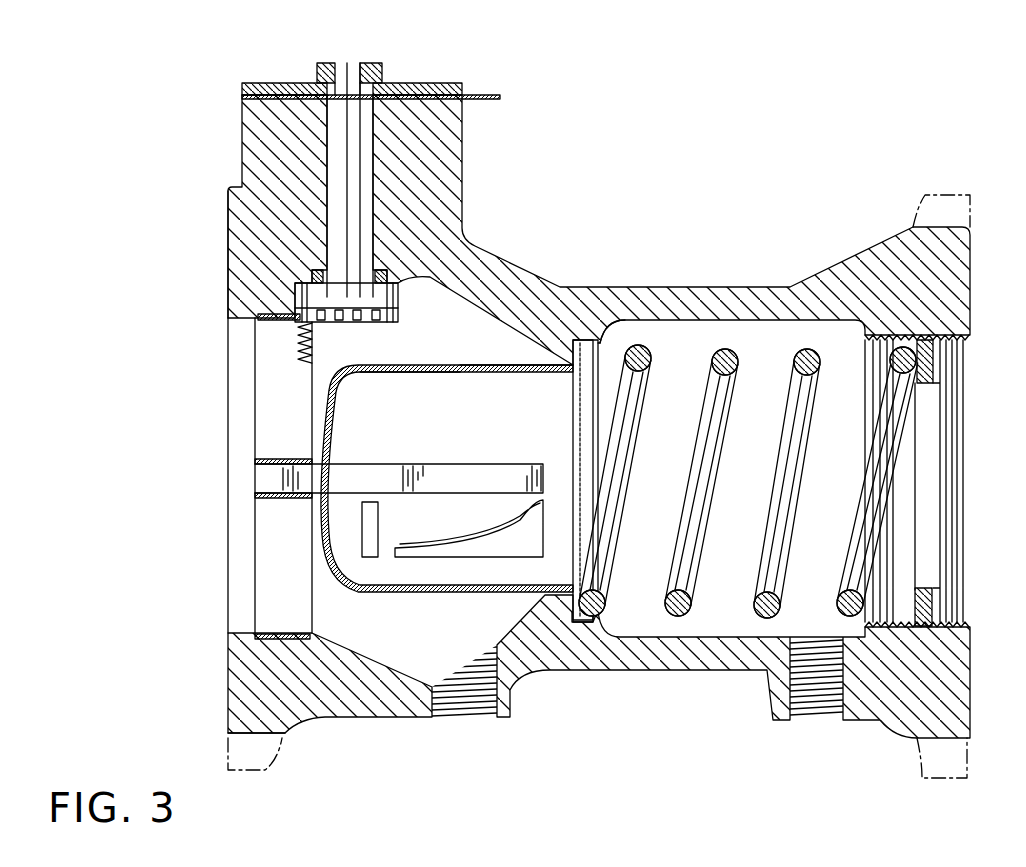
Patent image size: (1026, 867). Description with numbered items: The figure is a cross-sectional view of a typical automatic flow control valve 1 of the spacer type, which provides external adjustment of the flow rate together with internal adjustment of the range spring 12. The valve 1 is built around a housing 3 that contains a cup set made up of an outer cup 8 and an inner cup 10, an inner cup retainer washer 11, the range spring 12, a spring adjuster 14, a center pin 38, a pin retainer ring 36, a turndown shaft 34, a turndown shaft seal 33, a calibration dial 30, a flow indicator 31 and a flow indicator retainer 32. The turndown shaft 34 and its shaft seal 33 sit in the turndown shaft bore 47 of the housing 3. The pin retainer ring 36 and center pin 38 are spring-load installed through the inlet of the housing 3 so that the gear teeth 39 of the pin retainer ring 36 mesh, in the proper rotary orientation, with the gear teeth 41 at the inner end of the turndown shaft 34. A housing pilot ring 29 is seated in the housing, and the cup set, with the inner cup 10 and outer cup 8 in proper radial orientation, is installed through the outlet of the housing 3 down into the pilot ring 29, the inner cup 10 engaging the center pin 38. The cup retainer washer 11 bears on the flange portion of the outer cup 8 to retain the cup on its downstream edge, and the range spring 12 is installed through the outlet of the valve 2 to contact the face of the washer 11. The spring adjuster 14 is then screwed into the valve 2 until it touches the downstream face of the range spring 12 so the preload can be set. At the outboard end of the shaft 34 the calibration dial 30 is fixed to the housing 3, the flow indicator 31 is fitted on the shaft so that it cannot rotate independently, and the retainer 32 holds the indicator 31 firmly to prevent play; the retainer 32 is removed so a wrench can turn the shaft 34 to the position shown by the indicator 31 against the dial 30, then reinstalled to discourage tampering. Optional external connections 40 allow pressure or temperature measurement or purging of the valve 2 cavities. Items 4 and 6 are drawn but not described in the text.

The automatic flow control valve 1 is at (228, 640).
The valve 2 is at (332, 592).
The housing 3 is at (240, 697).
The leaf spring 4 is at (492, 546).
The slot 6 is at (376, 528).
The outer cup 8 is at (473, 365).
The inner cup 10 is at (459, 374).
The inner cup retainer washer 11 is at (596, 360).
The range spring 12 is at (810, 352).
The spring adjuster 14 is at (920, 365).
The housing pilot ring 29 is at (573, 340).
The calibration dial 30 is at (490, 97).
The flow indicator 31 is at (425, 83).
The flow indicator retainer 32 is at (320, 68).
The turndown shaft seal 33 is at (310, 268).
The turndown shaft 34 is at (328, 163).
The pin retainer ring 36 is at (262, 378).
The center pin 38 is at (438, 465).
The gear teeth 39 is at (312, 345).
The external connections 40 is at (462, 716).
The gear teeth 41 is at (381, 315).
The turndown shaft bore 47 is at (366, 186).